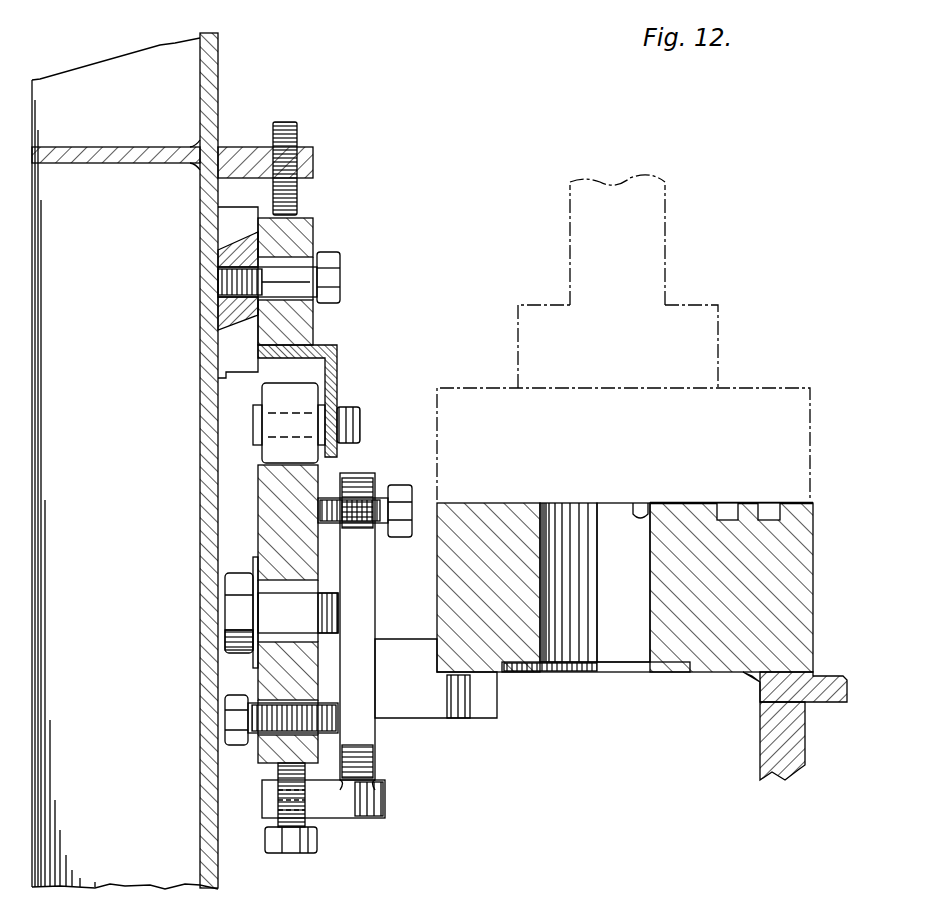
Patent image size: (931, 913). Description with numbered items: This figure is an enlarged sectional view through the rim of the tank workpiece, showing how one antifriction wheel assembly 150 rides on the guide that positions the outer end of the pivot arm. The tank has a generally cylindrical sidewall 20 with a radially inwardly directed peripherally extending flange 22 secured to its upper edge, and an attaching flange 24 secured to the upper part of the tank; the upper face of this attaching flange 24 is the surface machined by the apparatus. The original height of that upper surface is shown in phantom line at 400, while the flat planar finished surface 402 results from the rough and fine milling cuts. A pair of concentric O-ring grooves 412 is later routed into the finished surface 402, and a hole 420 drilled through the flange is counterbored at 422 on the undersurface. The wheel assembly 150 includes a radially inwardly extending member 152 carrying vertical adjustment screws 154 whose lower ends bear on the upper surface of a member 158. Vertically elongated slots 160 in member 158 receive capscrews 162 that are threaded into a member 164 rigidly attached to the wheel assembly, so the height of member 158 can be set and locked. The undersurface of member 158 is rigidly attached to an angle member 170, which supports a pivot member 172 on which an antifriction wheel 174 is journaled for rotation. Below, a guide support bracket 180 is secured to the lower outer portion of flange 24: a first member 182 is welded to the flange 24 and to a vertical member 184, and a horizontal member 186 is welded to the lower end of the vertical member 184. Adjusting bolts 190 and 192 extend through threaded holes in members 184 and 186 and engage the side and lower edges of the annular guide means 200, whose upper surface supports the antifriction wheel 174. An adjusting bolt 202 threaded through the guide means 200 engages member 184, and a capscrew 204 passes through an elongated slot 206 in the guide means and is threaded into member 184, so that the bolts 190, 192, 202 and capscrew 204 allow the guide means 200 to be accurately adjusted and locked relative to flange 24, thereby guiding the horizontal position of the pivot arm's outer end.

The antifriction wheel assembly 150 is at (240, 92).
The radially inwardly extending member 152 is at (313, 165).
The vertical adjustment screw 154 is at (290, 128).
The member 158 is at (274, 284).
The vertically elongated slot 160 is at (300, 310).
The capscrew 162 is at (340, 278).
The member 164 is at (232, 312).
The angle member 170 is at (337, 372).
The pivot member 172 is at (360, 425).
The antifriction wheel 174 is at (262, 450).
The guide support bracket 180 is at (400, 662).
The first member 182 is at (468, 720).
The vertical member 184 is at (366, 690).
The horizontal member 186 is at (335, 806).
The adjusting bolt 190 is at (437, 492).
The adjusting bolt 192 is at (288, 852).
The annular guide means 200 is at (257, 680).
The adjusting bolt 202 is at (232, 725).
The capscrew 204 is at (235, 612).
The elongated slot 206 is at (255, 560).
The attaching flange 24 is at (800, 585).
The sidewall 20 is at (800, 760).
The flange 22 is at (815, 700).
The original height of the upper surface 400 is at (740, 482).
The finished surface 402 is at (772, 503).
The O-ring groove 412 is at (735, 503).
The hole 420 is at (630, 503).
The counterbore 422 is at (675, 672).